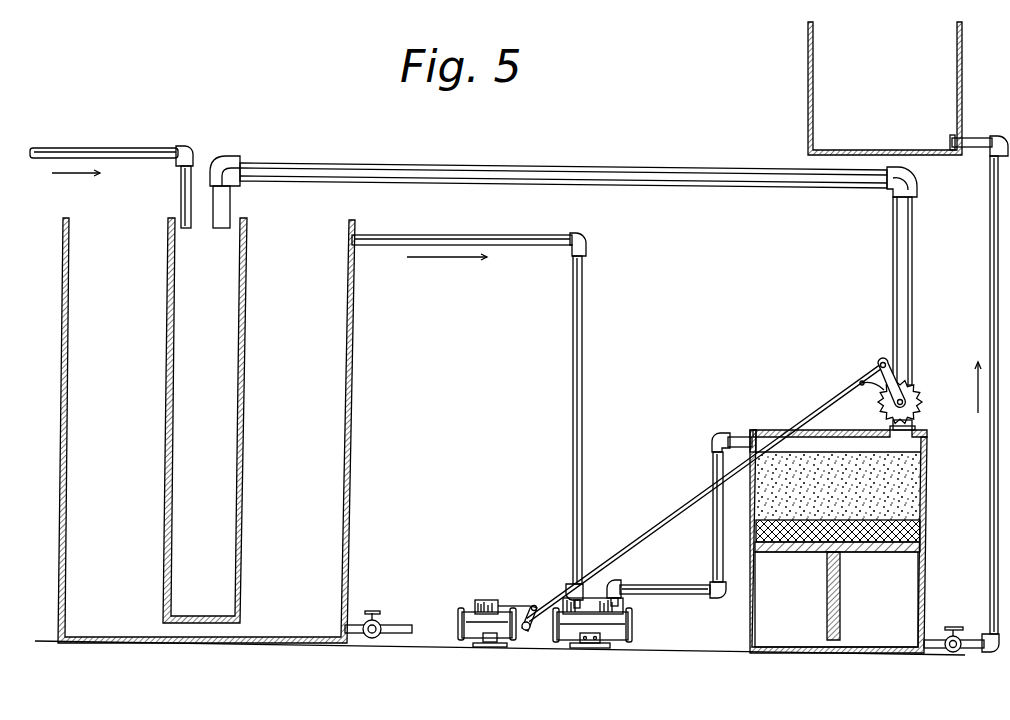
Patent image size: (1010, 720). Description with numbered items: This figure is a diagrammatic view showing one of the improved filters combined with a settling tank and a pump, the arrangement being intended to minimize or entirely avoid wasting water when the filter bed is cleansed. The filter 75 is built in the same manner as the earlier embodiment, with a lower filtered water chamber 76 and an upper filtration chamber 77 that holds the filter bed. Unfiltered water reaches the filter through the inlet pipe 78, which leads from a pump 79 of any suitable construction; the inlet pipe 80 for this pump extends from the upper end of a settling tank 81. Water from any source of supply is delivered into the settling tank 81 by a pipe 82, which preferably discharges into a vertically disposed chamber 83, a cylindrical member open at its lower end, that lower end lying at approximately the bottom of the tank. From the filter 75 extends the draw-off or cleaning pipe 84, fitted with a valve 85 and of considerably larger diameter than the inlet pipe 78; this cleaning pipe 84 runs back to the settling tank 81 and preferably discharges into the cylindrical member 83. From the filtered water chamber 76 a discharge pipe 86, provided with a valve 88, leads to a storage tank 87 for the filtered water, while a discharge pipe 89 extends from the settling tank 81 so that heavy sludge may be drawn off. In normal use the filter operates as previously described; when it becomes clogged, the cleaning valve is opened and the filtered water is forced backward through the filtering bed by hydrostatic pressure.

The filter 75 is at (925, 497).
The lower filtered water chamber 76 is at (900, 610).
The upper filtration chamber 77 is at (757, 487).
The inlet pipe 78 is at (707, 545).
The pump 79 is at (540, 607).
The inlet pipe 80 is at (582, 485).
The settling tank 81 is at (347, 432).
The pipe 82 is at (134, 153).
The vertically disposed chamber 83 is at (242, 348).
The draw-off pipe or cleaning pipe 84 is at (893, 347).
The valve 85 is at (878, 409).
The discharge pipe 86 is at (990, 562).
The storage tank 87 is at (808, 97).
The valve 88 is at (953, 660).
The discharge pipe 89 is at (396, 614).